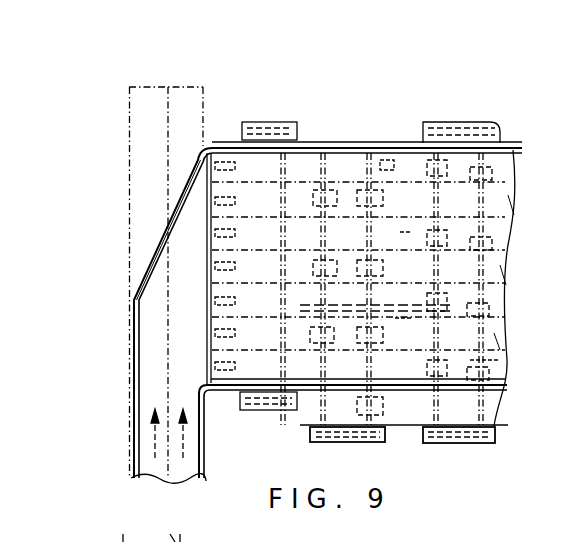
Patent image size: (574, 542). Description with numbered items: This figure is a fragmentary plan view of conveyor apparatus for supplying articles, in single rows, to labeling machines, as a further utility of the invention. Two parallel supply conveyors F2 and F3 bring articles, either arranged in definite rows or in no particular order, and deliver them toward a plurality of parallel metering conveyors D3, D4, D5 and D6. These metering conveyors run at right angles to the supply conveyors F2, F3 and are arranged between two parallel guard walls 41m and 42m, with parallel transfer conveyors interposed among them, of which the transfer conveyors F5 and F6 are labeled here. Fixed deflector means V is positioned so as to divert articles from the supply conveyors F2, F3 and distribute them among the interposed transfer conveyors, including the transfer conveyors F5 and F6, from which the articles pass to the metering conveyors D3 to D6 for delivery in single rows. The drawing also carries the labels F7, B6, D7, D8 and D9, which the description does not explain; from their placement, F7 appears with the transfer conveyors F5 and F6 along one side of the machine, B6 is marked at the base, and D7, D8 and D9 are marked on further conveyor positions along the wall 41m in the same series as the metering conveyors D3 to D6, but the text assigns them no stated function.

The guard wall 41m is at (313, 142).
The guard wall 42m is at (312, 392).
The fixed deflector means V is at (186, 192).
The supply conveyor F2 is at (188, 463).
The supply conveyor F3 is at (148, 452).
The transfer conveyor F5 is at (500, 273).
The transfer conveyor F6 is at (496, 340).
The frame portion F7 is at (511, 208).
The base member B6 is at (413, 400).
The metering conveyor D3 is at (214, 164).
The metering conveyor D4 is at (214, 201).
The metering conveyor D5 is at (214, 233).
The metering conveyor D6 is at (214, 266).
The discharge slot D7 is at (214, 300).
The discharge slot D8 is at (214, 333).
The discharge slot D9 is at (214, 366).